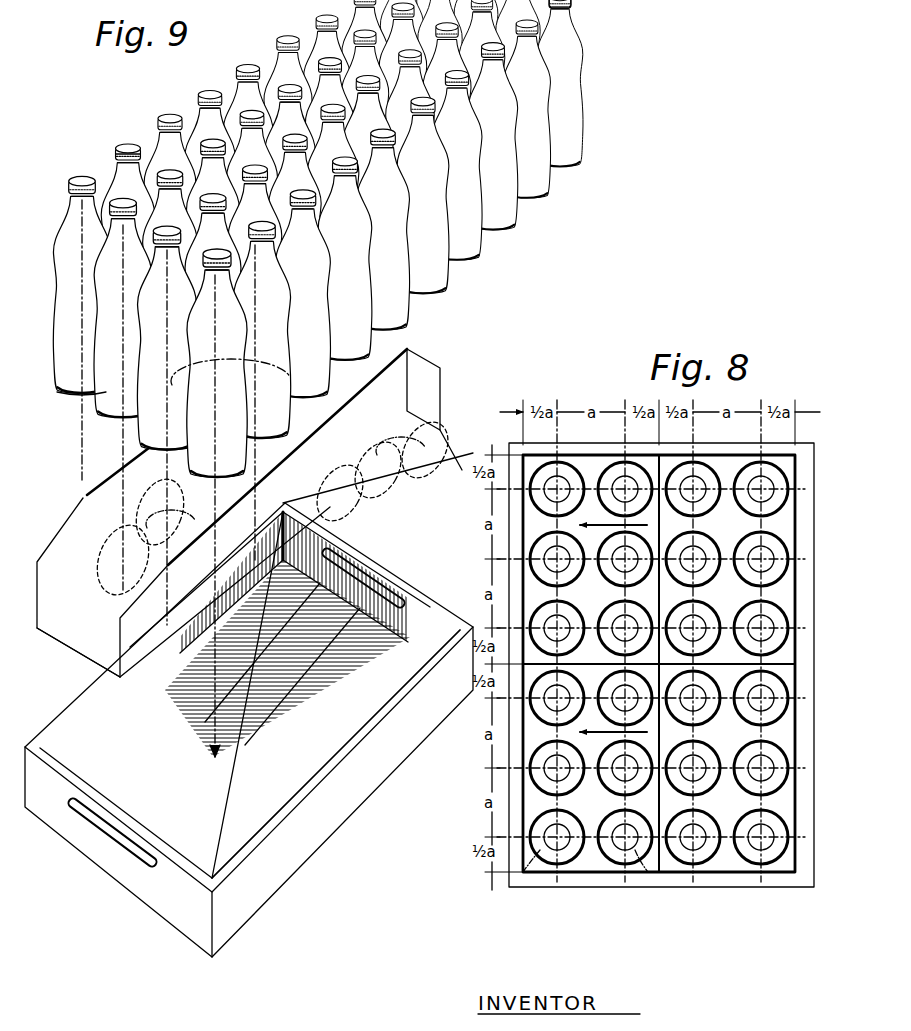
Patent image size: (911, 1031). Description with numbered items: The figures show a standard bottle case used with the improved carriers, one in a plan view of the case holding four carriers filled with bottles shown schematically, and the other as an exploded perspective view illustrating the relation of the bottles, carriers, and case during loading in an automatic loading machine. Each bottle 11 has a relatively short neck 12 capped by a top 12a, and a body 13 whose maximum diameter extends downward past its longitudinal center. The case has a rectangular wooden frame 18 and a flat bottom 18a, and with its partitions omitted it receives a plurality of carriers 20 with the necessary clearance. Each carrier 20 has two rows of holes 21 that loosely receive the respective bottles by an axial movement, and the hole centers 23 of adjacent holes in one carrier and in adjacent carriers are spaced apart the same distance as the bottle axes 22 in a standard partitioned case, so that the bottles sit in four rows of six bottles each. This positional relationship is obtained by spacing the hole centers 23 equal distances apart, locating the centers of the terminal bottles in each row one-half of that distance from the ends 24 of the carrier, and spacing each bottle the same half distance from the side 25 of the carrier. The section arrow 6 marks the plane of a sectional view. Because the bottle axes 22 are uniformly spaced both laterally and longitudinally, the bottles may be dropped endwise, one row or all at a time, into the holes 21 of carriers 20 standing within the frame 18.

In FIG. 8, the section line 6 is at (613, 641).
In FIG. 9, the bottle 11 is at (112, 173).
In FIG. 8, the bottle 11 is at (757, 572).
In FIG. 9, the neck 12 is at (572, 27).
In FIG. 9, the bottle top 12a is at (167, 166).
In FIG. 8, the bottle top 12a is at (618, 775).
In FIG. 9, the body 13 is at (95, 392).
In FIG. 9, the frame 18 is at (275, 880).
In FIG. 8, the frame 18 is at (570, 887).
In FIG. 9, the flat bottom 18a is at (265, 810).
In FIG. 9, the carrier 20 is at (80, 500).
In FIG. 9, the holes 21 is at (113, 578).
In FIG. 8, the holes 21 is at (540, 860).
In FIG. 9, the bottle axes 22 is at (82, 318).
In FIG. 8, the bottle axes 22 is at (612, 492).
In FIG. 9, the hole centers 23 is at (147, 525).
In FIG. 9, the ends of the carrier 24 is at (80, 660).
In FIG. 8, the ends of the carrier 24 is at (727, 455).
In FIG. 9, the side of the carrier 25 is at (463, 460).
In FIG. 8, the side of the carrier 25 is at (660, 868).